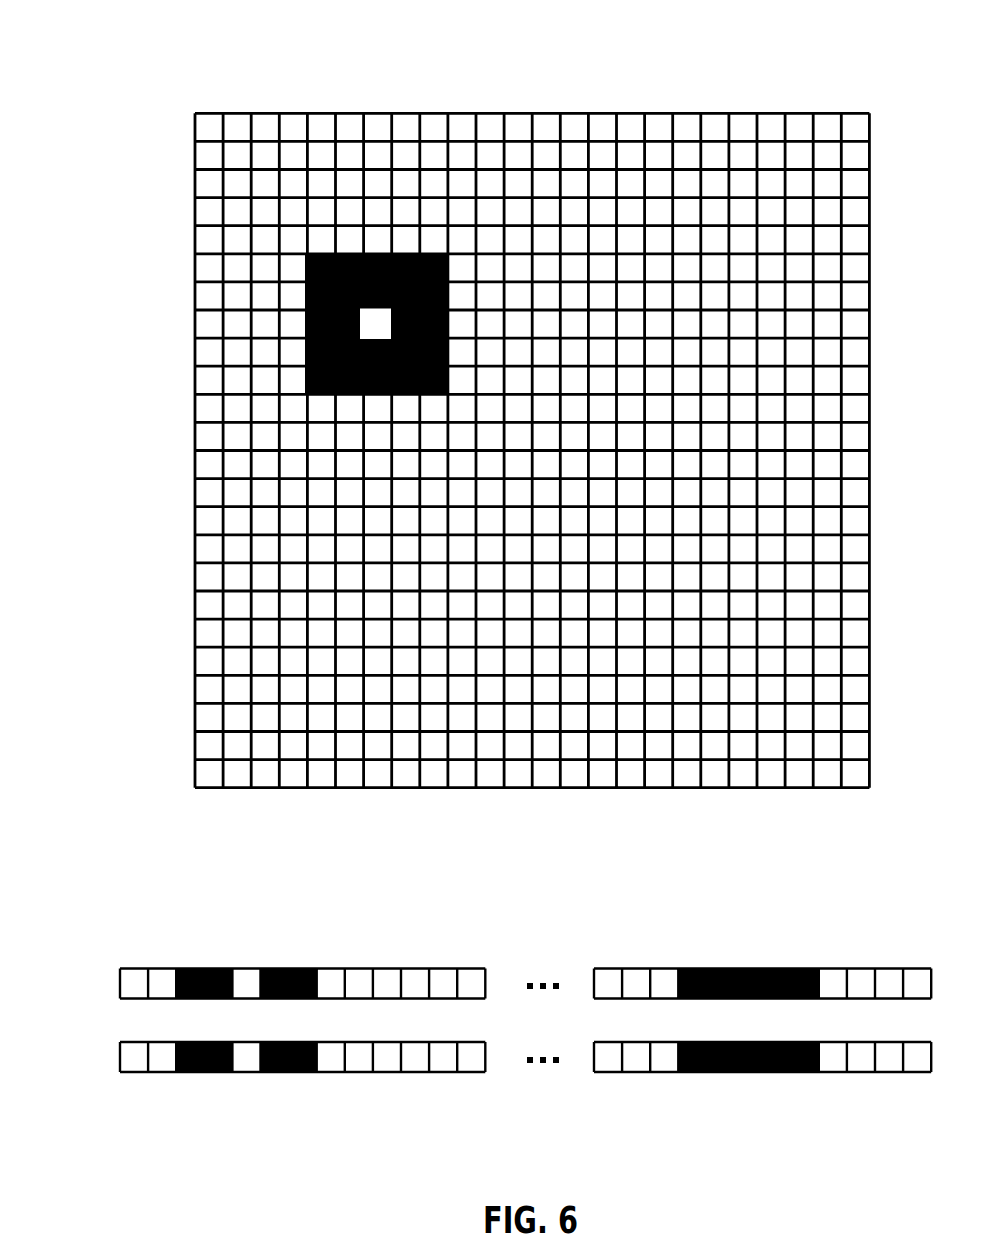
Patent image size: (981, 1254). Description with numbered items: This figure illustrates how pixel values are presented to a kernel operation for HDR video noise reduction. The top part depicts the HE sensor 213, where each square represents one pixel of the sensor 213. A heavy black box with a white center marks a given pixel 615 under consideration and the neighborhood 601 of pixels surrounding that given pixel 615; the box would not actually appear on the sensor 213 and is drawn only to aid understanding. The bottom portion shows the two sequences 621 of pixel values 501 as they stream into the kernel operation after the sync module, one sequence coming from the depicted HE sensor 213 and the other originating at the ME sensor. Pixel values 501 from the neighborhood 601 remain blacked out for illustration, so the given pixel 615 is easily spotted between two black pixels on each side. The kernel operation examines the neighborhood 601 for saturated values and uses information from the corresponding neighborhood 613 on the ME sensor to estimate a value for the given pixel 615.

The HE sensor 213 is at (548, 113).
The neighborhood of pixels 601 is at (273, 206).
The given pixel 615 is at (370, 321).
The pixel values 501 is at (821, 947).
The corresponding neighborhood 613 is at (724, 1072).
The sequences of pixel values 621 is at (474, 1010).